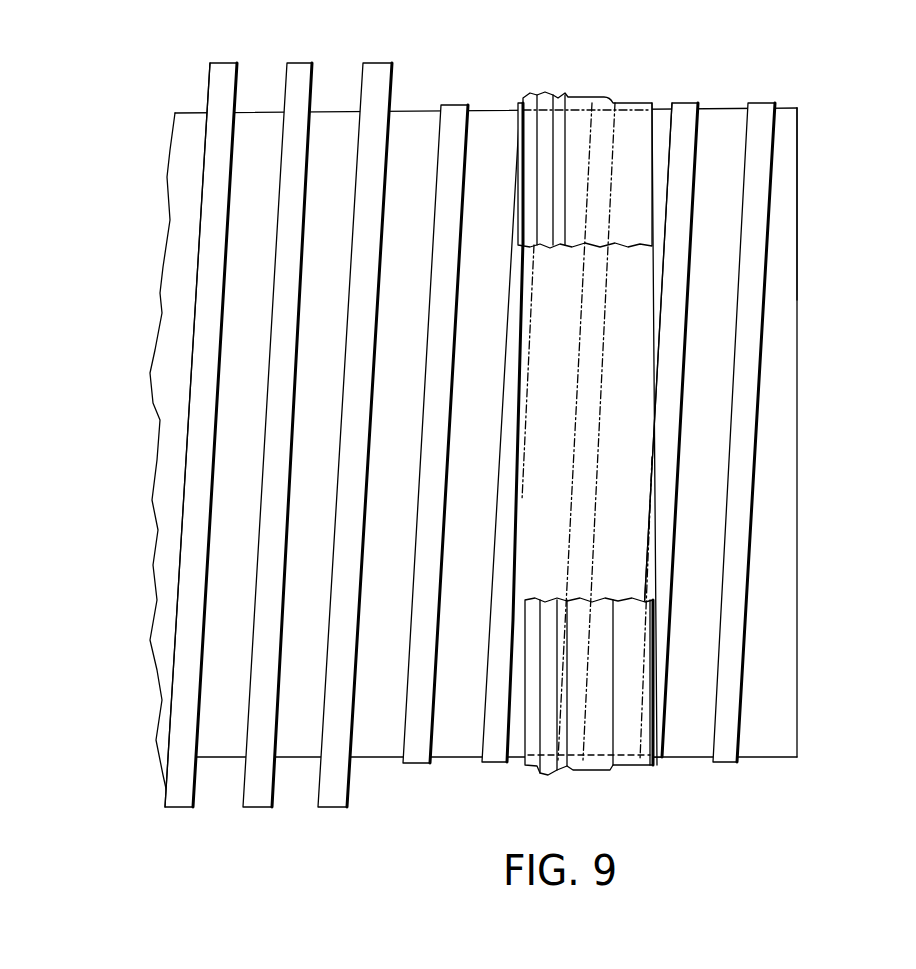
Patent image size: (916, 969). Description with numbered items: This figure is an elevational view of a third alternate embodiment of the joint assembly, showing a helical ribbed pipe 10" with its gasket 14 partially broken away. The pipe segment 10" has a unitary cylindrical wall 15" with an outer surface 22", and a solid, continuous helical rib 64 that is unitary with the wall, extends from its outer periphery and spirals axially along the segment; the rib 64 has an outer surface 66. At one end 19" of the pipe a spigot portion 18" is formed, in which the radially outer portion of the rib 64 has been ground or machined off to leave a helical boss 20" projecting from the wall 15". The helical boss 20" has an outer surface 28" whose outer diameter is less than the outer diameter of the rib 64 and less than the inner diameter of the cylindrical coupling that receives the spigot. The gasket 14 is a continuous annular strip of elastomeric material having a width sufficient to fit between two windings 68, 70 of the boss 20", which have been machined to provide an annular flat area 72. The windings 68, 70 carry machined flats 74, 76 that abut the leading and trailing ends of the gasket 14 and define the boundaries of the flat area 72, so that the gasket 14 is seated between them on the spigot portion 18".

The helical ribbed pipe 10 is at (124, 154).
The gasket 14 is at (568, 169).
The cylindrical wall 15 is at (333, 124).
The spigot portion 18 is at (790, 177).
The end 19 is at (802, 285).
The helical boss 20 is at (690, 107).
The outer surface of the wall 22 is at (487, 125).
The outer surface of the helical boss 28 is at (678, 103).
The helical rib 64 is at (222, 413).
The outer surface of the helical rib 66 is at (214, 62).
The winding 68 is at (492, 748).
The winding 70 is at (663, 667).
The annular flat area 72 is at (620, 421).
The machined flat 74 is at (652, 598).
The machined flat 76 is at (536, 208).